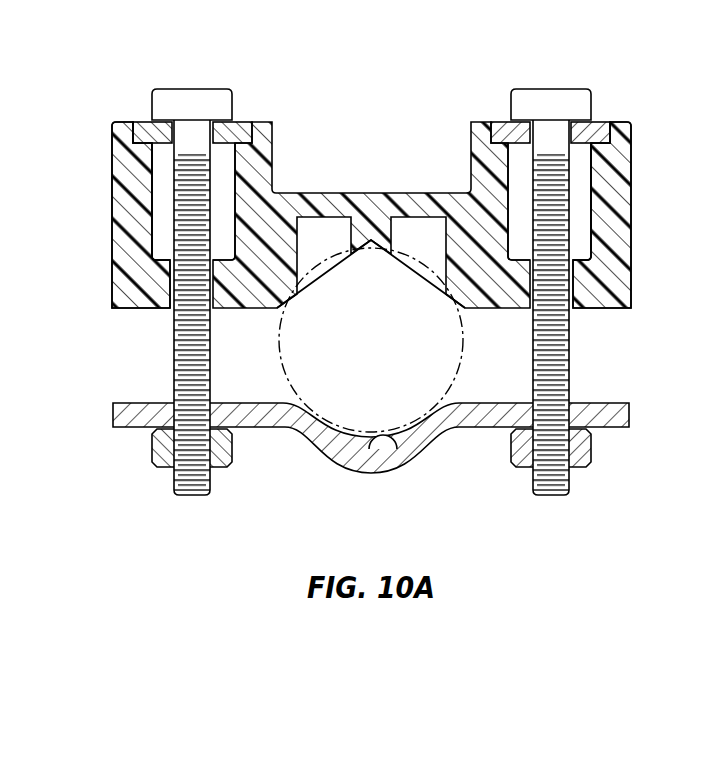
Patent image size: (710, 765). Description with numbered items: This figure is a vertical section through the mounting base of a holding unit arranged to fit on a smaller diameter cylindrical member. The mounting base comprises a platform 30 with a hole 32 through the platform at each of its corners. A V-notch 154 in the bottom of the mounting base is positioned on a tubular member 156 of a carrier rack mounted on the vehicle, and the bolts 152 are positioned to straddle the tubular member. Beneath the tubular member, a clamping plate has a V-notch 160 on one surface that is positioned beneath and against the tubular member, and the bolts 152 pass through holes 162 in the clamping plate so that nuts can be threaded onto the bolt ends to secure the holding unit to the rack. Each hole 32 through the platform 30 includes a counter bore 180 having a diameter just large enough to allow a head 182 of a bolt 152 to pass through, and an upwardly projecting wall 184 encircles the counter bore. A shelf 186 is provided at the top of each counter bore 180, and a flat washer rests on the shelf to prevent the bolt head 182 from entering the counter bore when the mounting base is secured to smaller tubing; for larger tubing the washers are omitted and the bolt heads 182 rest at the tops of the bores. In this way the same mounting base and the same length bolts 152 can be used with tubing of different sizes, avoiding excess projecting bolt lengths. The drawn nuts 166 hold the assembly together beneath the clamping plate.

The platform 30 is at (274, 130).
The hole 32 is at (180, 295).
The bolt 152 is at (174, 365).
The V-notch 154 is at (323, 275).
The tubular member 156 is at (463, 350).
The clamping plate V-notch 160 is at (313, 447).
The hole in clamping plate 162 is at (386, 440).
The nut 166 is at (152, 443).
The counter bore 180 is at (160, 216).
The bolt head 182 is at (177, 91).
The upwardly projecting wall 184 is at (147, 122).
The shelf 186 is at (142, 150).